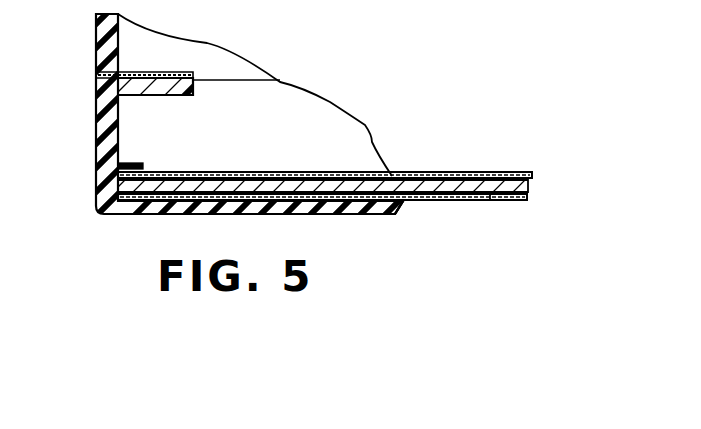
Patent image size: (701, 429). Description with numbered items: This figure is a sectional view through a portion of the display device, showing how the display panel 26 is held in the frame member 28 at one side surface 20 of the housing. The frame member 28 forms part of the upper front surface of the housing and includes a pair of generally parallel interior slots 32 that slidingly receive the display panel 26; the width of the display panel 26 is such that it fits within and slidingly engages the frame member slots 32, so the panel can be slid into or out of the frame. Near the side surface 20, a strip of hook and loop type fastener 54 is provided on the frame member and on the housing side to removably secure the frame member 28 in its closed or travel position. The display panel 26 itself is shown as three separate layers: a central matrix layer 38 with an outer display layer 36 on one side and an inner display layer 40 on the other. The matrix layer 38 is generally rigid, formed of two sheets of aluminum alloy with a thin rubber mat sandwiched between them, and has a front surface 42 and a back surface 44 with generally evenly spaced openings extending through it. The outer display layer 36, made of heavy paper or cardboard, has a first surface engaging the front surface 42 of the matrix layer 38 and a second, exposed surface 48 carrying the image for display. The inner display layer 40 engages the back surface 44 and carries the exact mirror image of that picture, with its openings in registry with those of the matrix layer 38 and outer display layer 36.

The side surface 20 is at (97, 135).
The display panel 26 is at (428, 203).
The frame member 28 is at (306, 205).
The interior slots 32 is at (118, 185).
The outer display layer 36 is at (518, 200).
The matrix layer 38 is at (528, 188).
The inner display layer 40 is at (456, 176).
The front surface 42 is at (528, 199).
The back surface 44 is at (530, 176).
The exposed surface 48 is at (475, 201).
The hook and loop fasteners 54 is at (159, 76).